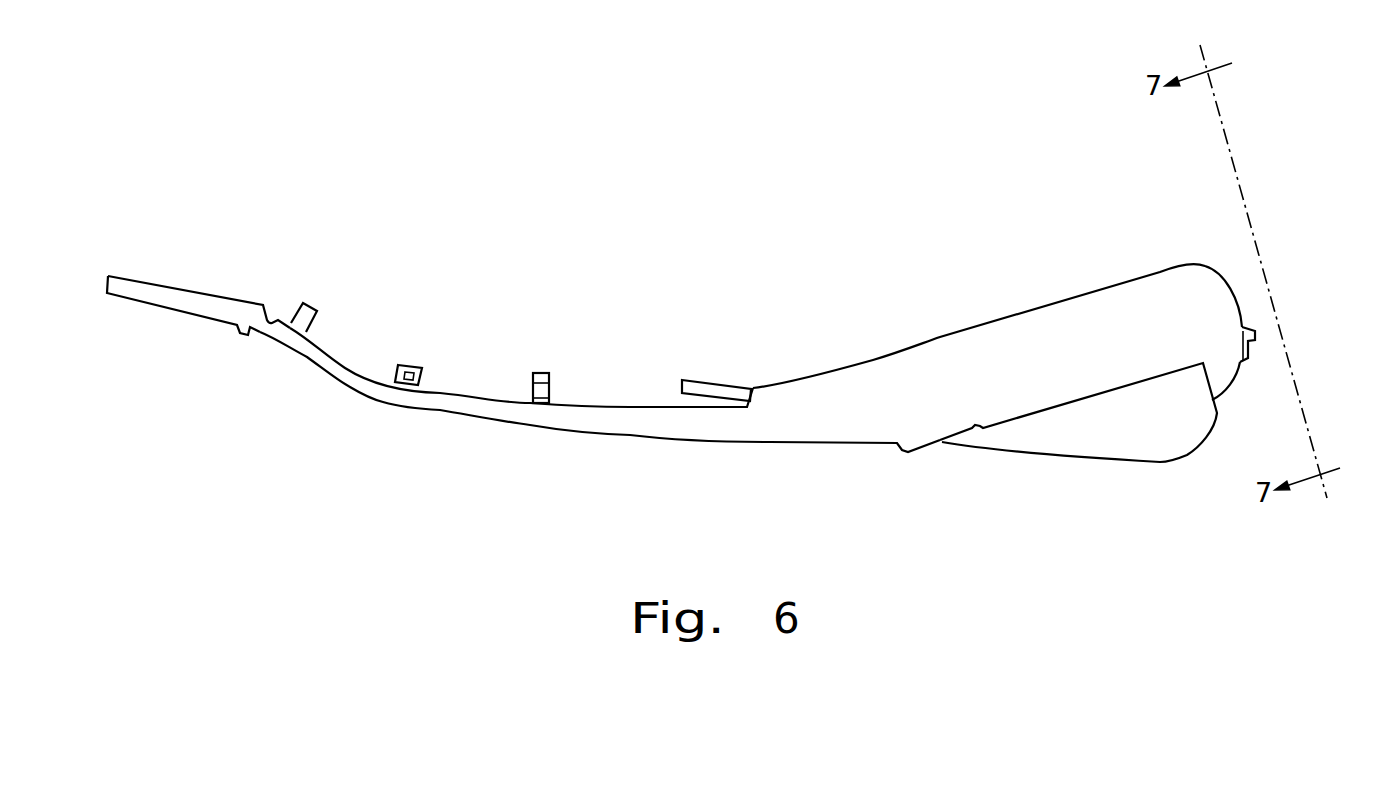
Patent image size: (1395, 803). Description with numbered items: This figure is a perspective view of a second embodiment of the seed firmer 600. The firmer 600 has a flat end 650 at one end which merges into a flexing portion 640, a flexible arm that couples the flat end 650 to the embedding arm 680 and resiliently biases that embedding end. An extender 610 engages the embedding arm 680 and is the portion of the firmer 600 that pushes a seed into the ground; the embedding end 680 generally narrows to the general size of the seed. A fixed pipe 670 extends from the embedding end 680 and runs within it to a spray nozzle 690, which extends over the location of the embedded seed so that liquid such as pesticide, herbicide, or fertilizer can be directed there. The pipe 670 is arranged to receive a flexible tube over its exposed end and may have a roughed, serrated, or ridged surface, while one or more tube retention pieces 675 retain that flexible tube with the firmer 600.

The firmer 600 is at (832, 330).
The extender 610 is at (1112, 452).
The flexing portion 640 is at (623, 425).
The flat end 650 is at (206, 312).
The pipe 670 is at (711, 380).
The tube retention piece 675 is at (539, 372).
The embedding arm 680 is at (1088, 310).
The spray nozzle 690 is at (1268, 336).